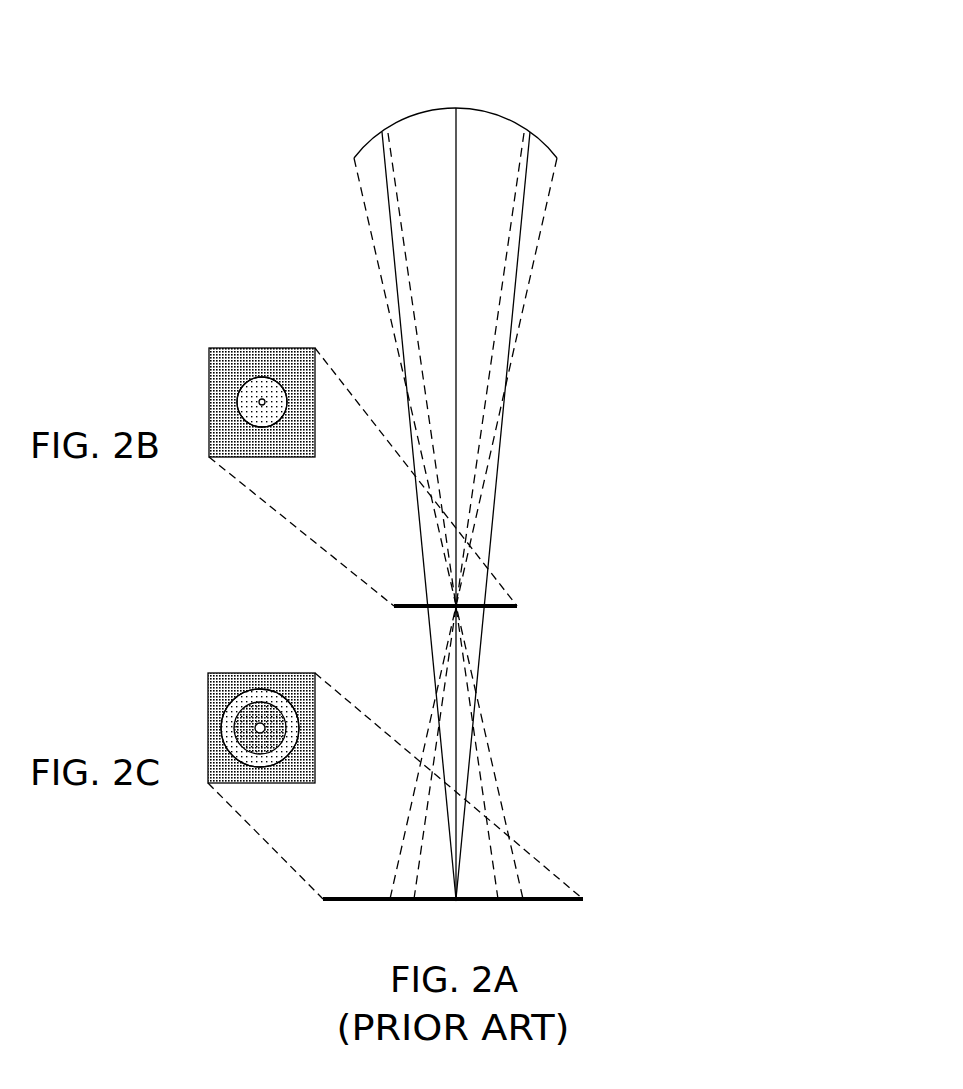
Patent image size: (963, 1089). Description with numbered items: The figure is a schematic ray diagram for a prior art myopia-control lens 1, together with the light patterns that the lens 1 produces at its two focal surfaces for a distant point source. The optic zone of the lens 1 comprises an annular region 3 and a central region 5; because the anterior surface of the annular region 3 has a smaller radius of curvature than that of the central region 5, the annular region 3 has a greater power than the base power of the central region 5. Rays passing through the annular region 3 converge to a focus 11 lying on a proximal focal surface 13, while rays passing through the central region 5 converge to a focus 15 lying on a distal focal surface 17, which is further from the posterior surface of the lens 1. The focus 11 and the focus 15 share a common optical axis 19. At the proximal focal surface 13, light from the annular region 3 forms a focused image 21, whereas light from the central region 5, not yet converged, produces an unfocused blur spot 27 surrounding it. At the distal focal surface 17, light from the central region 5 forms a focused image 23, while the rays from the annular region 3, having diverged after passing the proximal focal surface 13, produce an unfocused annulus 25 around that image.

In FIG. 2A, the lens 1 is at (446, 460).
In FIG. 2A, the annular region 3 is at (555, 135).
In FIG. 2A, the central region 5 is at (482, 110).
In FIG. 2A, the optical axis 19 is at (456, 294).
In FIG. 2A, the focus of the annular region 11 is at (456, 606).
In FIG. 2A, the proximal focal surface 13 is at (517, 606).
In FIG. 2A, the focus of the central region 15 is at (456, 899).
In FIG. 2A, the distal focal surface 17 is at (540, 900).
In FIG. 2B, the focused image 21 is at (259, 400).
In FIG. 2B, the unfocused blur spot 27 is at (263, 387).
In FIG. 2C, the focused image 23 is at (258, 726).
In FIG. 2C, the unfocused annulus 25 is at (238, 747).